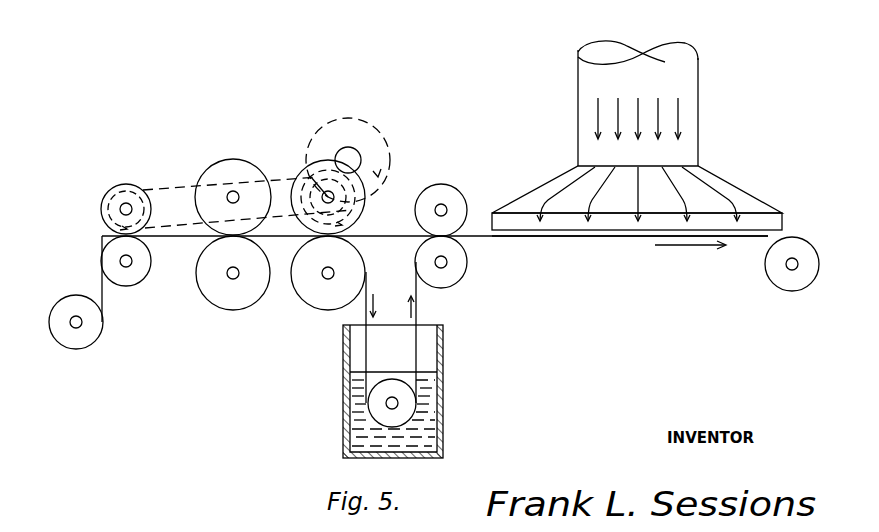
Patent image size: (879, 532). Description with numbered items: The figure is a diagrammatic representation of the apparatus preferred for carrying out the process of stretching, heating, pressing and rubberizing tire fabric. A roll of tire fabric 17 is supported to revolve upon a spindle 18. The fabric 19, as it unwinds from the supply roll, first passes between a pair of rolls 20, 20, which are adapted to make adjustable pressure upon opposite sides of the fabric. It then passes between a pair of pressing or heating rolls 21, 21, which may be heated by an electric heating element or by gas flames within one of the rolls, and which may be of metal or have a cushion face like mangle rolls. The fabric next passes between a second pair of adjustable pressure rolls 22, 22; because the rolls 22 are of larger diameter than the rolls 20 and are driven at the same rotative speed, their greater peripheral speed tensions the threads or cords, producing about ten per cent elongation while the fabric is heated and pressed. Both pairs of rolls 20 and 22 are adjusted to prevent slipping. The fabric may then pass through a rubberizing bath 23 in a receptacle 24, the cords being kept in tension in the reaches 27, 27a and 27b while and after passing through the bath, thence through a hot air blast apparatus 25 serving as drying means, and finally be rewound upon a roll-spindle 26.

The roll of tire fabric 17 is at (103, 330).
The spindle 18 is at (71, 316).
The fabric 19 is at (102, 292).
The pair of rolls 20 is at (130, 182).
The pressing or heating rolls 21 is at (238, 160).
The second pair of adjustable pressure rolls 22 is at (364, 204).
The rubberizing bath 23 is at (418, 373).
The receptacle 24 is at (443, 425).
The hot air blast apparatus 25 is at (703, 192).
The roll-spindle 26 is at (765, 266).
The reach 27 is at (367, 292).
The reach 27a is at (418, 318).
The reach 27b is at (580, 238).